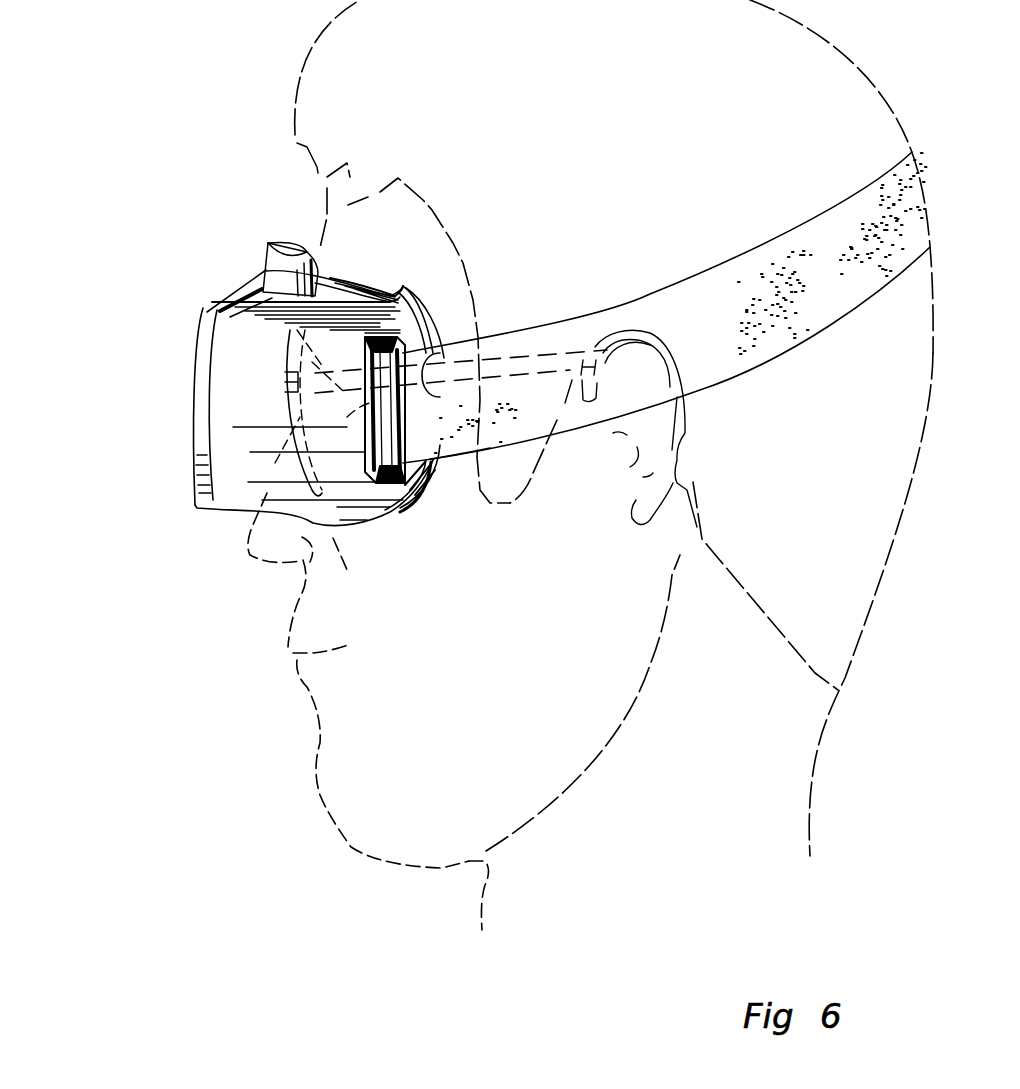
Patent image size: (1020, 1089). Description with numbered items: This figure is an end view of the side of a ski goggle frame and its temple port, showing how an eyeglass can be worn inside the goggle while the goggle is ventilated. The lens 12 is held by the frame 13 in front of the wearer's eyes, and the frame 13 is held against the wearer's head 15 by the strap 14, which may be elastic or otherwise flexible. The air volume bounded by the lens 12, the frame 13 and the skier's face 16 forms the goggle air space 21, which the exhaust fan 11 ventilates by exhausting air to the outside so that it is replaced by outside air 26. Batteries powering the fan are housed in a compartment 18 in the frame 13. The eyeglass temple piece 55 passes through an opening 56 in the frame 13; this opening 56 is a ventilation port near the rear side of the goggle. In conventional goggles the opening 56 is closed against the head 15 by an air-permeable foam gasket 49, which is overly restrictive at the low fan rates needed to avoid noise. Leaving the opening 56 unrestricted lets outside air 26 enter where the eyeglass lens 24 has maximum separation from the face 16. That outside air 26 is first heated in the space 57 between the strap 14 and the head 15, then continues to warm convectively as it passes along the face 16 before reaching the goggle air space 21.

The exhaust fan 11 is at (260, 263).
The lens 12 is at (182, 356).
The frame 13 is at (303, 413).
The strap 14 is at (666, 307).
The head 15 is at (883, 264).
The face 16 is at (338, 597).
The compartment 18 is at (394, 485).
The goggle air space 21 is at (251, 342).
The eyeglass lens 24 is at (288, 410).
The outside air 26 is at (516, 428).
The foam gasket 49 is at (395, 286).
The eyeglass temple piece 55 is at (544, 361).
The opening 56 is at (437, 351).
The space 57 is at (462, 459).